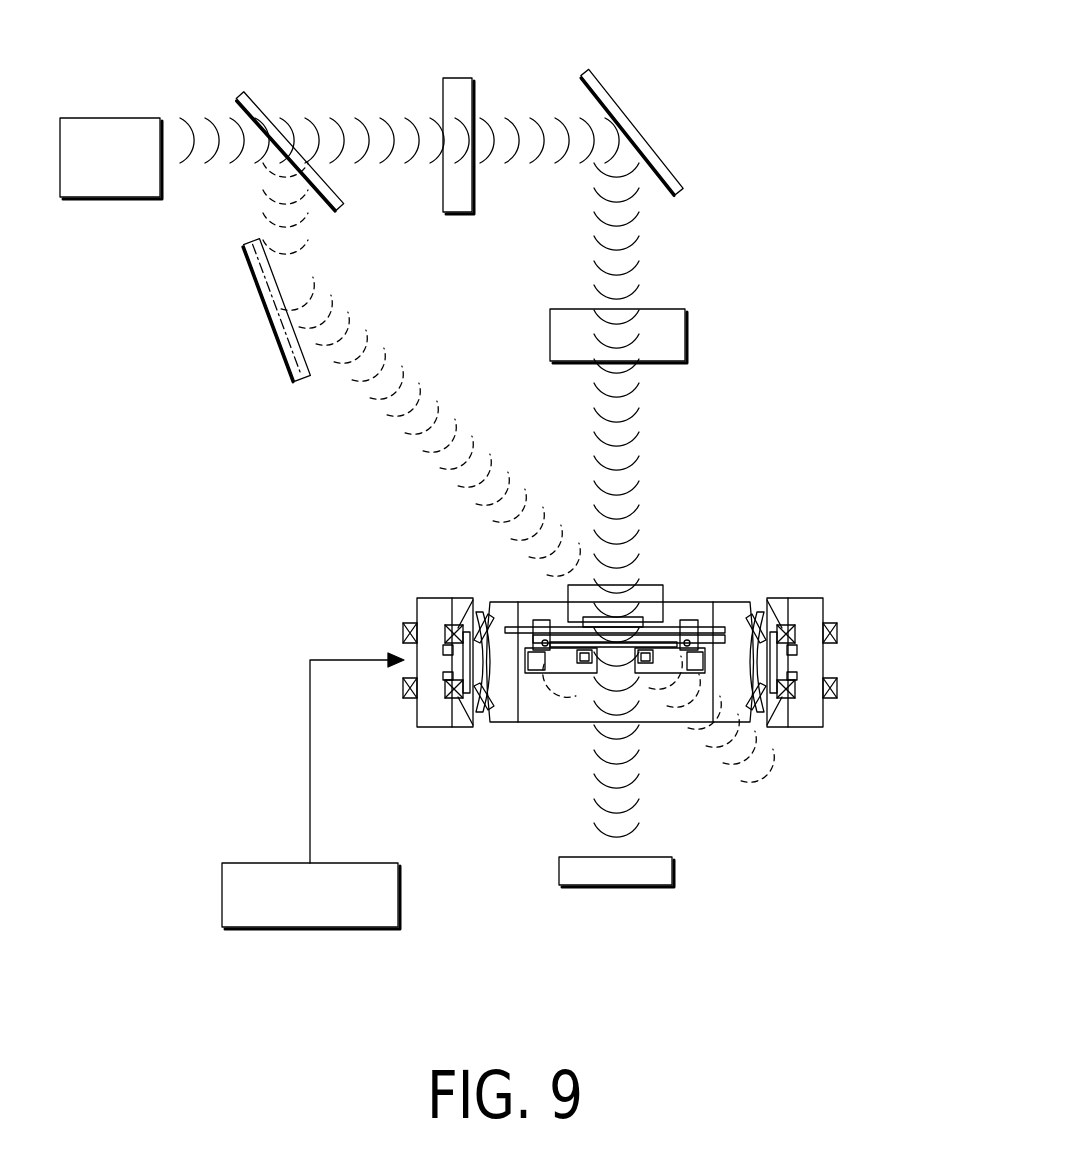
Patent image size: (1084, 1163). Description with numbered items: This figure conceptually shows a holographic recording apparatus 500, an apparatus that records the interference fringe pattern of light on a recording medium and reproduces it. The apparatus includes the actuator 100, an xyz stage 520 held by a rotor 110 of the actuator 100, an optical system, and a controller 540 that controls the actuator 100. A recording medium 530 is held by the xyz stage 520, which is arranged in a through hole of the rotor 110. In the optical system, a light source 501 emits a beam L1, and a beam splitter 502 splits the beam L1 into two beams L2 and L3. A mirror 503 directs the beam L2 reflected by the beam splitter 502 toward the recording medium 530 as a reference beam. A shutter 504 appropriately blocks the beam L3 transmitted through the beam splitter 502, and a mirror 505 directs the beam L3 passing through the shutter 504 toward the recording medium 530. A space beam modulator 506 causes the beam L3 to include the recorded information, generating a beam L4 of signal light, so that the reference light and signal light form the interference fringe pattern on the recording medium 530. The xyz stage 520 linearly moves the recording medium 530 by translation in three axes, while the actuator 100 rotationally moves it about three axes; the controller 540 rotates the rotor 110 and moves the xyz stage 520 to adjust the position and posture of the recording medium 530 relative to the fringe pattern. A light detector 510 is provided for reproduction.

The holographic recording apparatus 500 is at (855, 100).
The light source 501 is at (105, 118).
The beam splitter 502 is at (264, 108).
The mirror 503 is at (277, 330).
The shutter 504 is at (456, 78).
The mirror 505 is at (655, 138).
The space beam modulator 506 is at (688, 335).
The light detector 510 is at (675, 872).
The xyz stage 520 is at (562, 678).
The recording medium 530 is at (652, 585).
The controller 540 is at (345, 863).
The actuator 100 is at (645, 638).
The rotor 110 is at (735, 600).
The beam L1 is at (200, 125).
The beam L2 is at (302, 242).
The beam L3 is at (362, 125).
The beam of signal light L4 is at (640, 452).